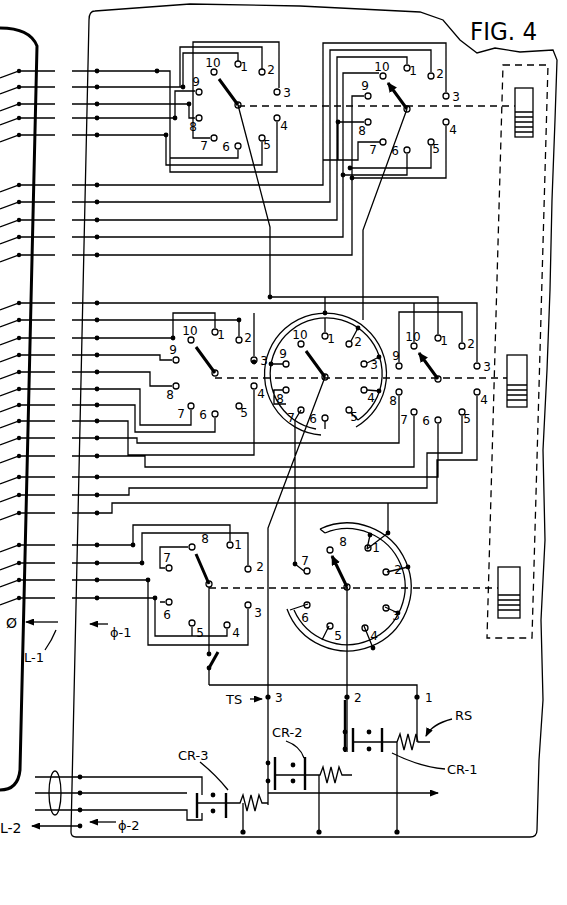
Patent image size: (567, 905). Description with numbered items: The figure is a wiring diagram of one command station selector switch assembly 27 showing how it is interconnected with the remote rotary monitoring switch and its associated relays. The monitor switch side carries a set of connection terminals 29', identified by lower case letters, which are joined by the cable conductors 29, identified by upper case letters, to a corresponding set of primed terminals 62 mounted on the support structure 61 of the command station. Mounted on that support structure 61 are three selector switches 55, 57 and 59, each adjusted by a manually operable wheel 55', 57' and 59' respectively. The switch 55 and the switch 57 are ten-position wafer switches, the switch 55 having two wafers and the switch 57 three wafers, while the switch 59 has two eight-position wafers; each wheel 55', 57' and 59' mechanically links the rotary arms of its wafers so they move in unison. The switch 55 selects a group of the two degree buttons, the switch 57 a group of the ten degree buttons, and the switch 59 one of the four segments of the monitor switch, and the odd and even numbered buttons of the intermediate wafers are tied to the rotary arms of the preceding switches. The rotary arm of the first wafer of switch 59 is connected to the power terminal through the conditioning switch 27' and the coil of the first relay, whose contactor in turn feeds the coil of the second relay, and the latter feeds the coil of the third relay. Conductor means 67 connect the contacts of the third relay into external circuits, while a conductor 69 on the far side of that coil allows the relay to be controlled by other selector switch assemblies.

The conductors 29 is at (48, 307).
The connection terminals 29' is at (21, 399).
The terminal strip of programmer 62 is at (103, 56).
The support structure 61 is at (93, 274).
The selector switch 55 is at (334, 106).
The manually operable wheel 55' is at (523, 134).
The selector switch 57 is at (341, 369).
The manually operable wheel 57' is at (516, 362).
The selector switch 59 is at (310, 627).
The manually operable wheel 59' is at (508, 573).
The command station selector switch assembly 27 is at (509, 381).
The conditioning switch 27' is at (233, 636).
The conductor means 67 is at (54, 786).
The conductor 69 is at (365, 802).